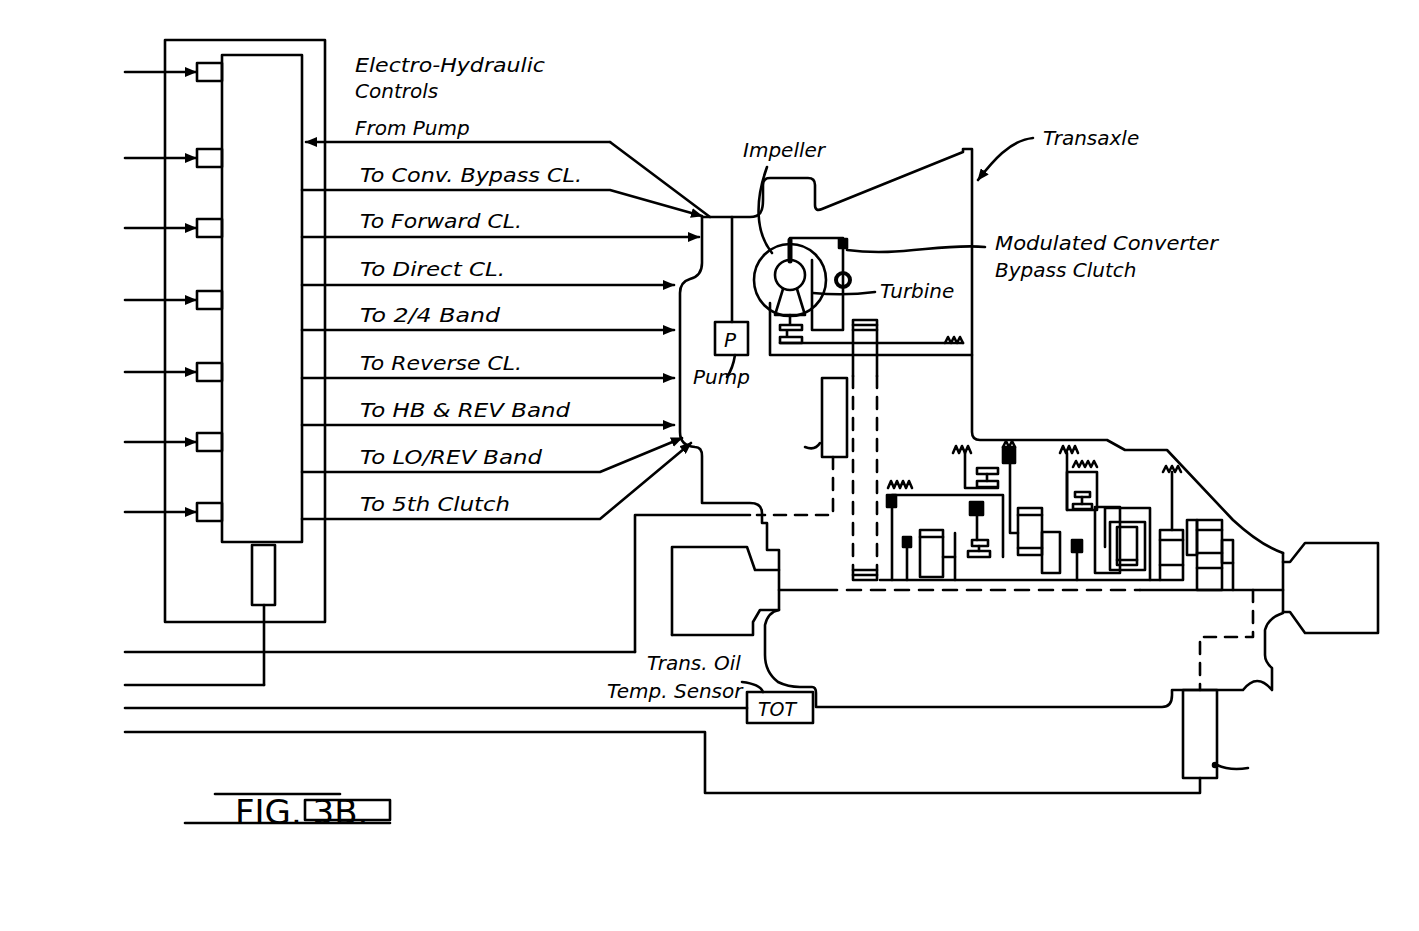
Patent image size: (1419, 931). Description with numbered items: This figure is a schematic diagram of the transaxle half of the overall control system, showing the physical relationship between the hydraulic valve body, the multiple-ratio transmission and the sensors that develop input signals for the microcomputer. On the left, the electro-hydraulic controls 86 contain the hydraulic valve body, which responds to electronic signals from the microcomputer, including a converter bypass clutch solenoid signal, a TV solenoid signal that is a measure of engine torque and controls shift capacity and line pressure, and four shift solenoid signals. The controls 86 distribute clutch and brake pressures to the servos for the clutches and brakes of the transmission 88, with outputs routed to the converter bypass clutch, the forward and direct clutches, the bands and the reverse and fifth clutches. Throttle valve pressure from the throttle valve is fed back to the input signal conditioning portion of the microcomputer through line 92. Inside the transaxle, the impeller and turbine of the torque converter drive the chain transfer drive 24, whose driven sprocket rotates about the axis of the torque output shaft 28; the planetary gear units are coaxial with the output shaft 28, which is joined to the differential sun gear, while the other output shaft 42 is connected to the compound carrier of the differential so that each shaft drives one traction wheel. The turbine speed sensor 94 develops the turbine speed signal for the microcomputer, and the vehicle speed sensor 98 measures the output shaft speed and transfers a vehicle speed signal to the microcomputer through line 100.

The electro-hydraulic controls 86 is at (272, 117).
The line 92 is at (265, 674).
The line 100 is at (635, 735).
The chain transfer drive 24 is at (878, 437).
The turbine speed sensor 94 is at (847, 400).
The transmission 88 is at (1107, 437).
The torque output shaft 28 is at (810, 592).
The output shaft 42 is at (1263, 590).
The vehicle speed sensor 98 is at (1183, 743).